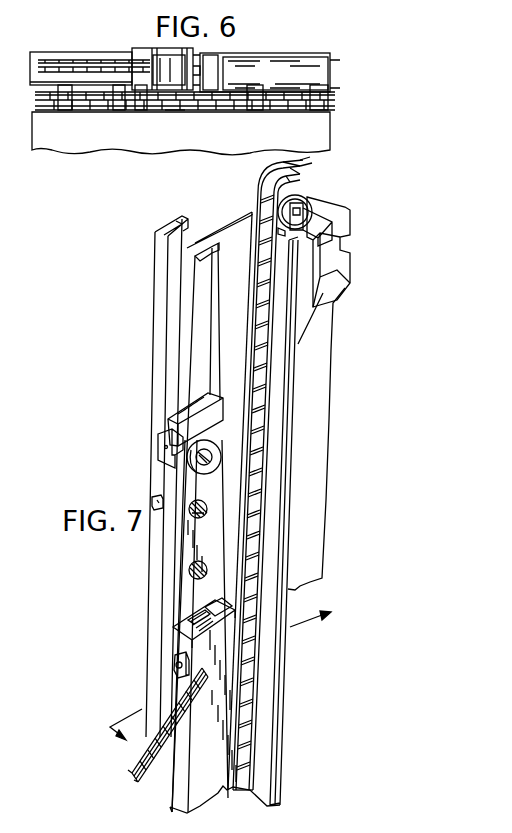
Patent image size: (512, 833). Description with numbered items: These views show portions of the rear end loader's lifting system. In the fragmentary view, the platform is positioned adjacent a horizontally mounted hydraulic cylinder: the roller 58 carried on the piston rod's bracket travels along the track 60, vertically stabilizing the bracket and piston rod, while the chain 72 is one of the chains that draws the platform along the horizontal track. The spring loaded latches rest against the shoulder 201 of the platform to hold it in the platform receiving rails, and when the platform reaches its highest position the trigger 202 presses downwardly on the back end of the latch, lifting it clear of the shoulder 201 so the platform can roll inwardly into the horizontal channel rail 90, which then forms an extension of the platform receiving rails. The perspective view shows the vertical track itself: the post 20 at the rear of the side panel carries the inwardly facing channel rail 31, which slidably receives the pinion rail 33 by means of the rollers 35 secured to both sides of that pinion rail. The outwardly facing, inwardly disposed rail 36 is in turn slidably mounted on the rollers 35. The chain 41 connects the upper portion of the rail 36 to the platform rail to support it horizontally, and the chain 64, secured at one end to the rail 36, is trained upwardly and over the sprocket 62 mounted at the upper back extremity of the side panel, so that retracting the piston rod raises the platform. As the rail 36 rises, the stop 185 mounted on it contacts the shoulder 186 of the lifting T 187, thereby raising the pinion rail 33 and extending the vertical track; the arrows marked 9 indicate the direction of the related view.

In FIG. 6, the track 60 is at (62, 55).
In FIG. 6, the roller 58 is at (170, 57).
In FIG. 6, the chain 72 is at (35, 97).
In FIG. 6, the shoulder 201 is at (176, 110).
In FIG. 7, the sprocket 62 is at (305, 184).
In FIG. 7, the trigger 202 is at (316, 212).
In FIG. 7, the post 20 is at (227, 234).
In FIG. 7, the channel rail 31 is at (158, 312).
In FIG. 7, the pinion rail 33 is at (223, 438).
In FIG. 7, the shoulder 186 is at (204, 447).
In FIG. 7, the lifting T 187 is at (161, 462).
In FIG. 7, the rollers 35 is at (194, 468).
In FIG. 7, the chain 64 is at (263, 483).
In FIG. 7, the channel rail 90 is at (319, 393).
In FIG. 7, the stop 185 is at (174, 664).
In FIG. 7, the chain 41 is at (146, 776).
In FIG. 7, the rail 36 is at (219, 796).
In FIG. 7, the section line 9 is at (221, 677).